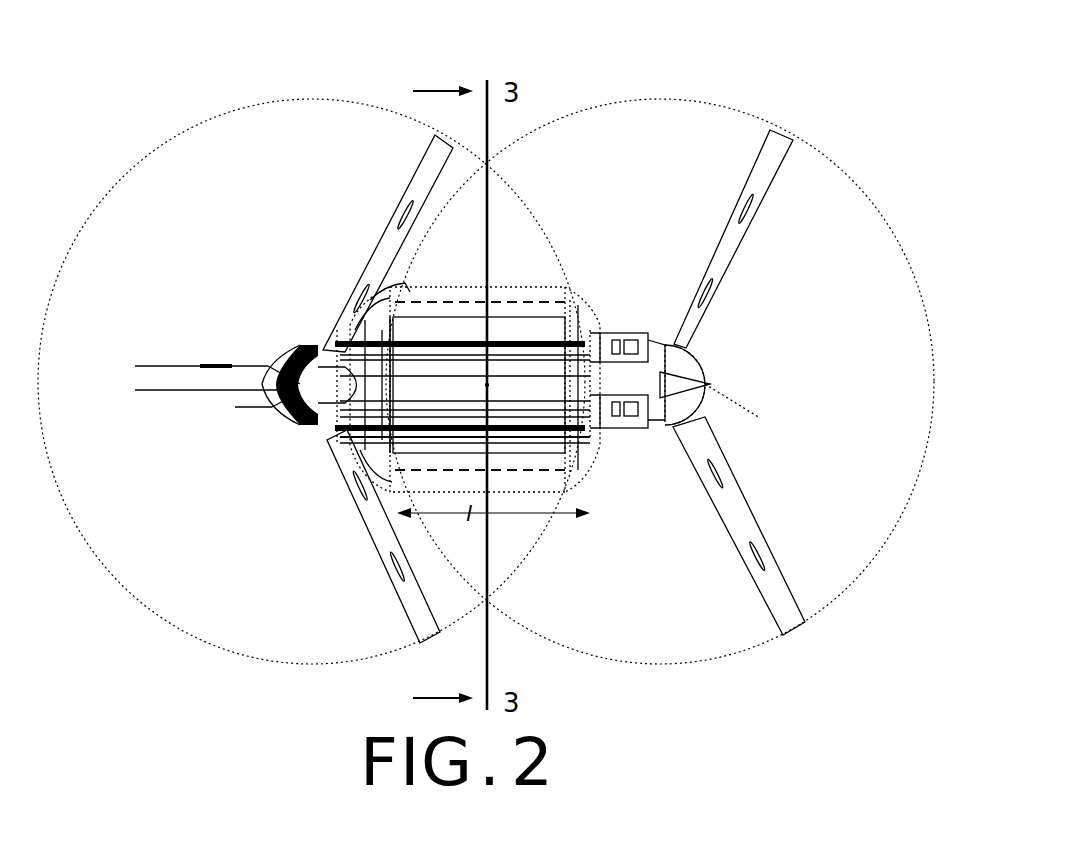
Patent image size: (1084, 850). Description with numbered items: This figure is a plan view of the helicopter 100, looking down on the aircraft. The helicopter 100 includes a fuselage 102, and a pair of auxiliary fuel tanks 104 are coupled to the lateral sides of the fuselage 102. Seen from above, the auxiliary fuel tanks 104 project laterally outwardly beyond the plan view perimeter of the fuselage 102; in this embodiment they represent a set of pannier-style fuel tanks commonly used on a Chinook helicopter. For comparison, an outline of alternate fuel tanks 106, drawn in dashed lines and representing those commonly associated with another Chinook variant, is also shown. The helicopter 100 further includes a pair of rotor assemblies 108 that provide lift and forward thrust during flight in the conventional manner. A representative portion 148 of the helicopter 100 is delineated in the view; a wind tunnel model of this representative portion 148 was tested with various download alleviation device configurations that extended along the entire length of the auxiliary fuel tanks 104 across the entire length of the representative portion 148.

The helicopter 100 is at (818, 82).
The fuselage 102 is at (278, 357).
The auxiliary fuel tanks 104 is at (548, 322).
The alternate fuel tanks 106 is at (522, 296).
The rotor assemblies 108 is at (300, 425).
The representative portion 148 is at (395, 262).